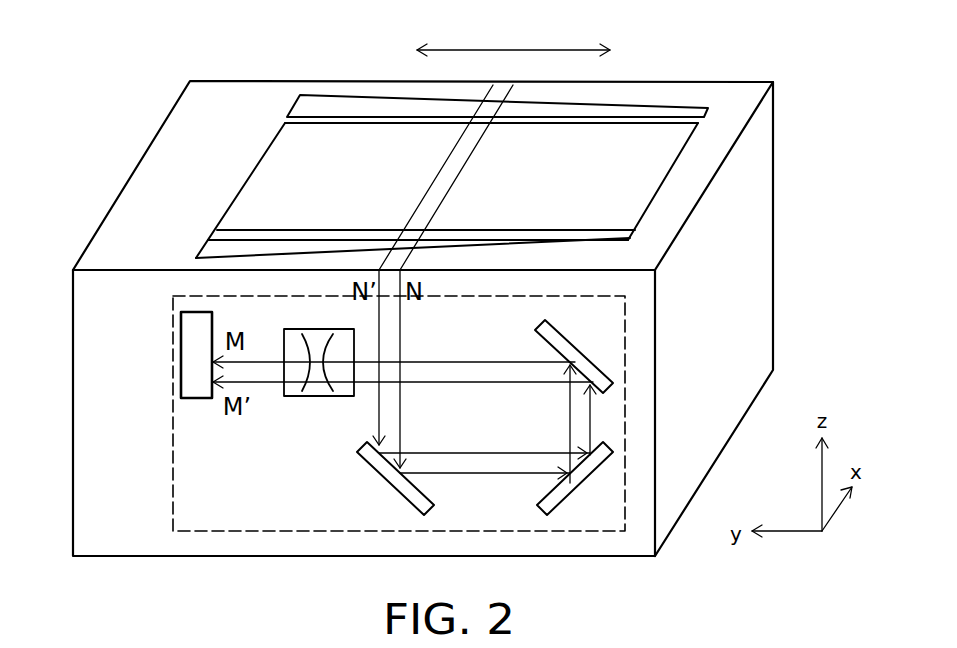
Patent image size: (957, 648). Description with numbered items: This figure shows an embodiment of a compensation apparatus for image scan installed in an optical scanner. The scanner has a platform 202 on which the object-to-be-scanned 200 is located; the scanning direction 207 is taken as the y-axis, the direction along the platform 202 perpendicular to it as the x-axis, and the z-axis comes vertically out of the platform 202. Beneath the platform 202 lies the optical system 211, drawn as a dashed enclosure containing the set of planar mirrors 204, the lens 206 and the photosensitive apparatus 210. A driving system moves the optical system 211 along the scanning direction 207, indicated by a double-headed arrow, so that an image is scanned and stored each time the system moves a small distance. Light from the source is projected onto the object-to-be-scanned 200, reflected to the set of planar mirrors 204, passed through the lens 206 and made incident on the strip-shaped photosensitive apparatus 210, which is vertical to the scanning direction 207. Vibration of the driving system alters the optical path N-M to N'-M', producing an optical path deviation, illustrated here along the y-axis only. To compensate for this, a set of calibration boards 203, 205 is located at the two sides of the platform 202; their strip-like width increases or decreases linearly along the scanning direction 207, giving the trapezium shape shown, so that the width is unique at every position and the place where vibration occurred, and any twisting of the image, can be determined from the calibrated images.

The object-to-be-scanned 200 is at (612, 178).
The platform 202 is at (693, 165).
The calibration board 203 is at (667, 112).
The set of planar mirrors 204 is at (573, 348).
The calibration board 205 is at (560, 240).
The lens 206 is at (307, 329).
The scanning direction 207 is at (452, 47).
The photosensitive apparatus 210 is at (197, 387).
The optical system 211 is at (630, 427).